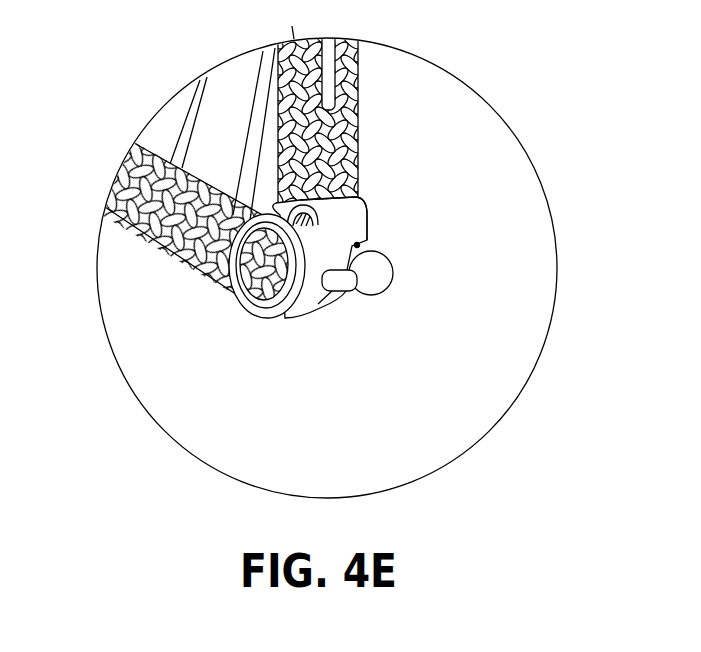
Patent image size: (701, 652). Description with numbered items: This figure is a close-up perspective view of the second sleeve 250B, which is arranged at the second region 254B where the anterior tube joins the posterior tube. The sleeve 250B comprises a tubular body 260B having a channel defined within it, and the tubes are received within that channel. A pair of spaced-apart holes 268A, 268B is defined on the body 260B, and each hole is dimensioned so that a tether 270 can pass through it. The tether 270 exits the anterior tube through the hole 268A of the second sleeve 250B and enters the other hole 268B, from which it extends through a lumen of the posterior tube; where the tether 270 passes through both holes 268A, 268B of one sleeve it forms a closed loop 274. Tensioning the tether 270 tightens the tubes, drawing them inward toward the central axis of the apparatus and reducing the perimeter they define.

The second sleeve 250B is at (319, 311).
The second region 254B is at (378, 206).
The body 260B is at (300, 287).
The hole 268A is at (335, 292).
The hole 268B is at (360, 246).
The tether 270 is at (345, 279).
The closed loop 274 is at (384, 258).